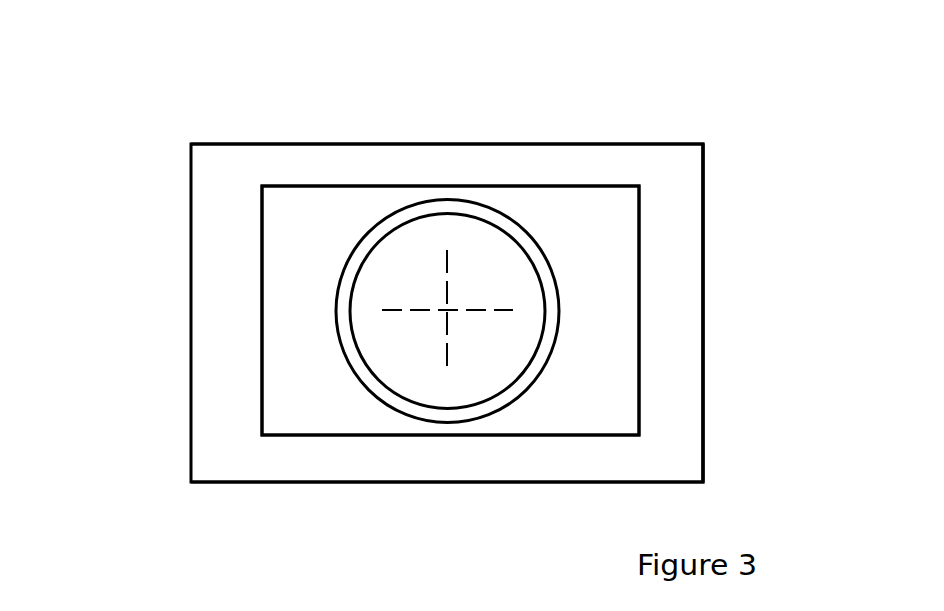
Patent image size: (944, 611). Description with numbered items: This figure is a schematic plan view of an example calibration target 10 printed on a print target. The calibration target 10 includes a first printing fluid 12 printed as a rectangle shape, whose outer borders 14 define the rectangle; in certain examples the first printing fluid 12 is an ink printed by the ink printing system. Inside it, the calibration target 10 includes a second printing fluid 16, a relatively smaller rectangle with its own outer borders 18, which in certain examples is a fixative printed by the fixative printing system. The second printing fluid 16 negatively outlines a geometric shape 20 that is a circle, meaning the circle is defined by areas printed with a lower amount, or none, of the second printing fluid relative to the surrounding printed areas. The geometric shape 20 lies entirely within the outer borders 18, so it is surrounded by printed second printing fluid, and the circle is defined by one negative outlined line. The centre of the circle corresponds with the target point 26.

The calibration target 10 is at (278, 493).
The first printing fluid figure 12 is at (665, 340).
The outer borders 14 is at (387, 130).
The second printing fluid figure 16 is at (339, 405).
The outer borders 18 is at (650, 252).
The geometric figure 20 is at (381, 235).
The target point 26 is at (460, 291).